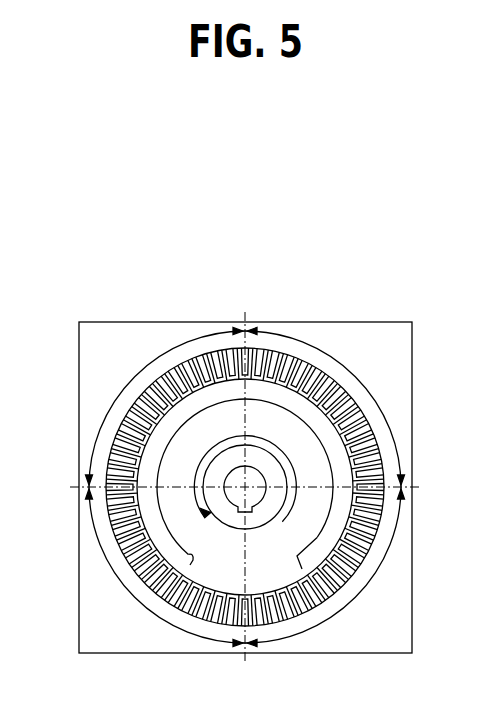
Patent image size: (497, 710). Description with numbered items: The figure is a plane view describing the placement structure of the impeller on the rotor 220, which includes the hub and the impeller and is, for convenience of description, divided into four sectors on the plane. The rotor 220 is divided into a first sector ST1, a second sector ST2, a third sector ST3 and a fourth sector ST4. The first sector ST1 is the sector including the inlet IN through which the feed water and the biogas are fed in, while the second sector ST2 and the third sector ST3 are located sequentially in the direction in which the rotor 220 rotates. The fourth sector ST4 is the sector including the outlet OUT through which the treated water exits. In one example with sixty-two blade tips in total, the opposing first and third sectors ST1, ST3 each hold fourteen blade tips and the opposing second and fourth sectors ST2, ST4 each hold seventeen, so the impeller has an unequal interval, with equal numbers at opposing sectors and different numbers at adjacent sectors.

The rotor 220 is at (112, 246).
The first sector ST1 is at (355, 573).
The second sector ST2 is at (352, 399).
The third sector ST3 is at (134, 403).
The fourth sector ST4 is at (138, 576).
The inlet IN is at (302, 569).
The outlet OUT is at (190, 565).